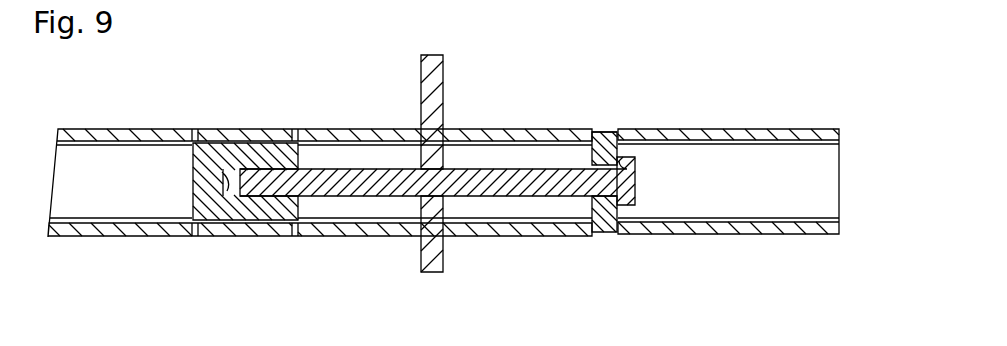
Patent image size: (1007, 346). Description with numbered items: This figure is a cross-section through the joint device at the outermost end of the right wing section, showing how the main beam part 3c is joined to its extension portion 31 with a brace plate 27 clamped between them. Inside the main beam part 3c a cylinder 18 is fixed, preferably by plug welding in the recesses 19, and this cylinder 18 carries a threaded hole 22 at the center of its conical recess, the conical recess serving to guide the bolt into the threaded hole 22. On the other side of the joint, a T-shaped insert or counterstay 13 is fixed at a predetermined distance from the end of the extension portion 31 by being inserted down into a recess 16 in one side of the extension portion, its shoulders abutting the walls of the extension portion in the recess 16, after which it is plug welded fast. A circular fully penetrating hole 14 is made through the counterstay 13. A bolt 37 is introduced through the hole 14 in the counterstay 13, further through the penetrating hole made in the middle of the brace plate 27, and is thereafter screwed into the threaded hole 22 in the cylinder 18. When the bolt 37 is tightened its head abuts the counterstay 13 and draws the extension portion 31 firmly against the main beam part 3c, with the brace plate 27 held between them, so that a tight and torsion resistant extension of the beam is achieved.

The main beam part 3c is at (85, 133).
The counterstay 13 is at (605, 132).
The hole 14 is at (626, 168).
The recess 16 is at (598, 131).
The cylinder 18 is at (192, 178).
The recesses 19 is at (198, 130).
The threaded hole 22 is at (232, 221).
The brace plate 27 is at (423, 64).
The extension portion 31 is at (785, 130).
The bolt 37 is at (318, 190).